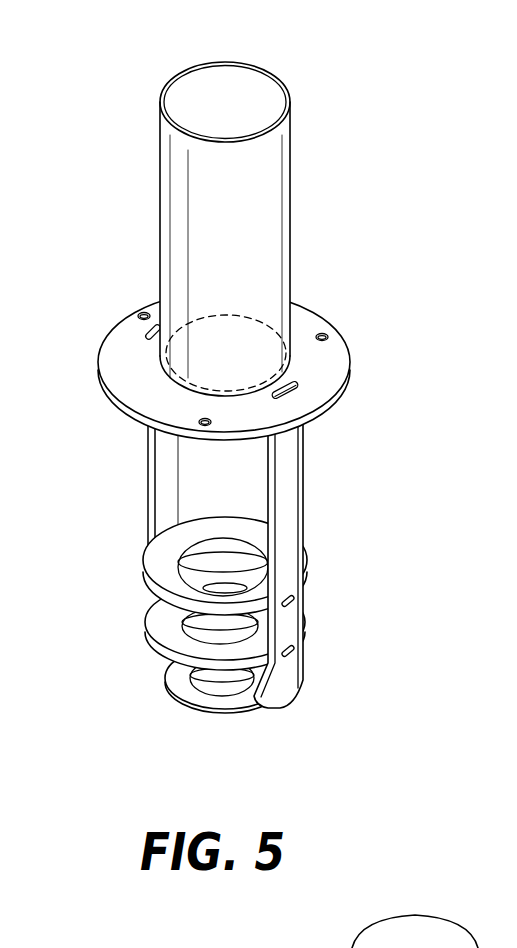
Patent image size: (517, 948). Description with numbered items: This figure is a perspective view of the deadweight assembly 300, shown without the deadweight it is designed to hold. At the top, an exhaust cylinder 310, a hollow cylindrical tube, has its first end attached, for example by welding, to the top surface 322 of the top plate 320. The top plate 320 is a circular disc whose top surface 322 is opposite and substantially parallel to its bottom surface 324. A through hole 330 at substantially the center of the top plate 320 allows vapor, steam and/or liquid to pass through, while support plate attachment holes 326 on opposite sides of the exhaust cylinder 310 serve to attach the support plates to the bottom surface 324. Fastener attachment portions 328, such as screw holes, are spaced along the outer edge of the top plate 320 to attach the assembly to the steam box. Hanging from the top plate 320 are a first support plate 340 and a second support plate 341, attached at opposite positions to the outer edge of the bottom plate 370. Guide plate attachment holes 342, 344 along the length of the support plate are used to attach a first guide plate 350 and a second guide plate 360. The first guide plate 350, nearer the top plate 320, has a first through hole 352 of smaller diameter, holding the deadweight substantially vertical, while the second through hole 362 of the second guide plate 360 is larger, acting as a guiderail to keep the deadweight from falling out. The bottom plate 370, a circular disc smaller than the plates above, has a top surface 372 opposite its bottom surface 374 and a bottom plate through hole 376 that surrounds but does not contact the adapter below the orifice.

The deadweight assembly 300 is at (222, 400).
The exhaust cylinder 310 is at (247, 173).
The top plate 320 is at (242, 362).
The top surface 322 is at (325, 358).
The bottom surface 324 is at (326, 421).
The support plate attachment holes 326 is at (296, 396).
The fastener attachment portions 328 is at (142, 312).
The through hole 330 is at (170, 338).
The first support plate 340 is at (314, 554).
The second support plate 341 is at (167, 485).
The guide plate attachment hole 342 is at (289, 604).
The guide plate attachment hole 344 is at (292, 656).
The first guide plate 350 is at (175, 558).
The first through hole 352 is at (215, 550).
The second guide plate 360 is at (183, 635).
The second through hole 362 is at (195, 658).
The bottom plate 370 is at (215, 719).
The top surface 372 is at (180, 688).
The bottom surface 374 is at (219, 726).
The bottom plate through hole 376 is at (215, 680).